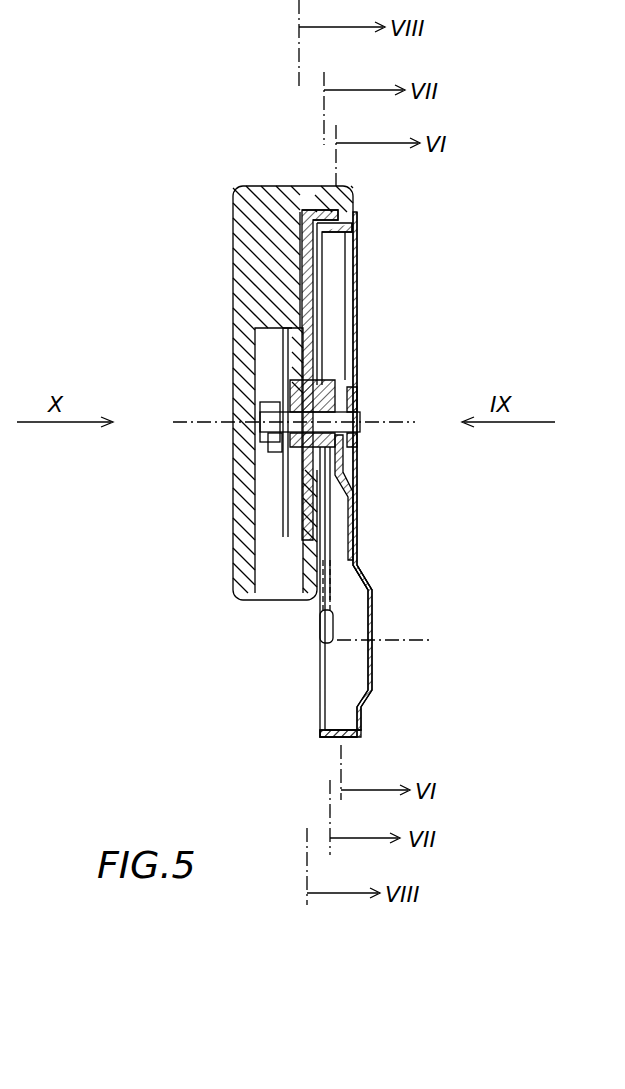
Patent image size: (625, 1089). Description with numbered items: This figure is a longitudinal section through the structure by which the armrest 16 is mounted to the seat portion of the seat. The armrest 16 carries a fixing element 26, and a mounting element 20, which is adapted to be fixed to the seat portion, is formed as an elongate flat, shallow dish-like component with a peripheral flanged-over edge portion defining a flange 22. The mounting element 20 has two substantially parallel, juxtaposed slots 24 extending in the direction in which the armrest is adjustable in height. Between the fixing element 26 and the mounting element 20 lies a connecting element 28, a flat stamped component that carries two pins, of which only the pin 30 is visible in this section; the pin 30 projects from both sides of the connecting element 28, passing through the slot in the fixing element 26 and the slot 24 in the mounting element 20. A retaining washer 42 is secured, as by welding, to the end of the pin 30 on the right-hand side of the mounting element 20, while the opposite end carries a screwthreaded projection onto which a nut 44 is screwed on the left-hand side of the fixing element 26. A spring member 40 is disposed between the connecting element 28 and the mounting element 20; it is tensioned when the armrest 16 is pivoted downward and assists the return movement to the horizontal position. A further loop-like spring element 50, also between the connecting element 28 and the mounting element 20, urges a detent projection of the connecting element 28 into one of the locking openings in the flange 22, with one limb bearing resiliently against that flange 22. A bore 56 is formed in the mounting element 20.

The armrest 16 is at (247, 258).
The mounting element 20 is at (358, 542).
The flange 22 is at (345, 247).
The slots 24 is at (344, 330).
The fixing element 26 is at (300, 272).
The connecting element 28 is at (356, 494).
The pin 30 is at (350, 418).
The spring member 40 is at (283, 378).
The washer 42 is at (360, 440).
The nut 44 is at (255, 438).
The spring element 50 is at (318, 634).
The bore 56 is at (370, 648).